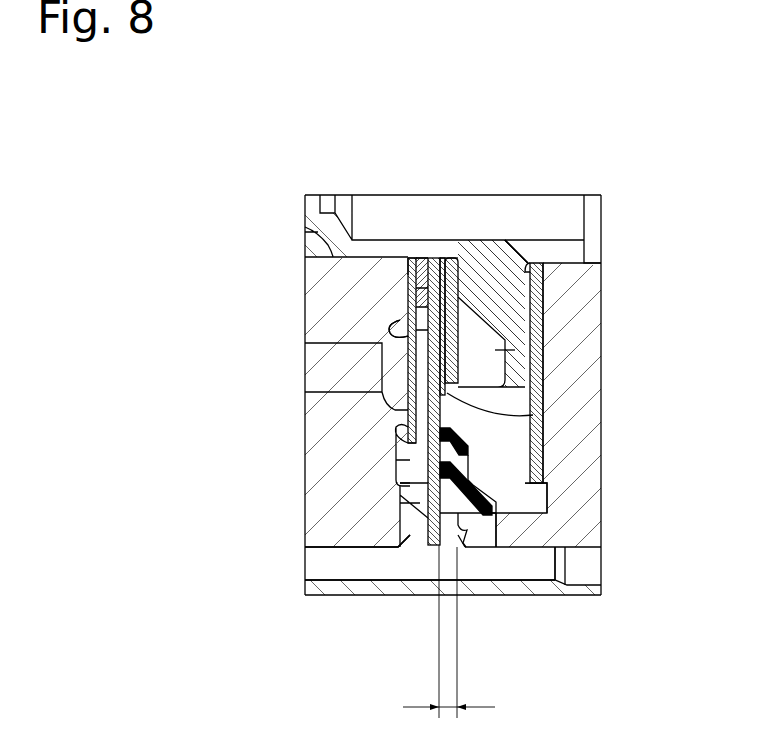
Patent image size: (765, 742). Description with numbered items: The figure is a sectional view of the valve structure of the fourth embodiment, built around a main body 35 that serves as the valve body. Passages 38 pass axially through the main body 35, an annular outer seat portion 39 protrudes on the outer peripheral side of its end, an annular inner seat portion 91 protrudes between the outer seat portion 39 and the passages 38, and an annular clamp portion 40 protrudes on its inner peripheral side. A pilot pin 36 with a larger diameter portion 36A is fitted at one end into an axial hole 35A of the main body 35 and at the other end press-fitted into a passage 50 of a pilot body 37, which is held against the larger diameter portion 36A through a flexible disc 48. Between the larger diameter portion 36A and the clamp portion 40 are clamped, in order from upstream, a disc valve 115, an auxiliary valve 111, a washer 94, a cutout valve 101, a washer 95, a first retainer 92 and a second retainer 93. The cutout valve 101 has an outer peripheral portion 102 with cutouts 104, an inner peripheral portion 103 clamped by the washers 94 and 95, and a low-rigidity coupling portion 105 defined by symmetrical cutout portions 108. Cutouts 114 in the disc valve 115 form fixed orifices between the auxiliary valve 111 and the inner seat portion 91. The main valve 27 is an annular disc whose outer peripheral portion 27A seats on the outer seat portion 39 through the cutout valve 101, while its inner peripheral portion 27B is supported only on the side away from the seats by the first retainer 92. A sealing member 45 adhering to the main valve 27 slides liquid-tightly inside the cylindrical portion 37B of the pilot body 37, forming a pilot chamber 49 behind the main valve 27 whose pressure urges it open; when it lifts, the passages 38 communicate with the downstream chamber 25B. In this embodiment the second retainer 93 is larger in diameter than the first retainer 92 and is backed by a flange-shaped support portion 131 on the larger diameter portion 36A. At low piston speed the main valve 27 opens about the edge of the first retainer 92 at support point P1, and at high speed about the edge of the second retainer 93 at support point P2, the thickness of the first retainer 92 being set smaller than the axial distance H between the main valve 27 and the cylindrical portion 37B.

The chamber 25B is at (305, 590).
The main valve 27 is at (433, 546).
The outer peripheral portion 27A is at (477, 528).
The inner peripheral portion 27B is at (545, 386).
The main body 35 is at (360, 549).
The axial hole 35A is at (312, 233).
The pilot pin 36 is at (592, 255).
The larger diameter portion 36A is at (548, 302).
The pilot body 37 is at (582, 549).
The cylindrical portion 37B is at (565, 563).
The passages 38 is at (332, 370).
The outer seat portion 39 is at (427, 527).
The clamp portion 40 is at (380, 337).
The sealing member 45 is at (528, 527).
The flexible disc 48 is at (568, 213).
The pilot chamber 49 is at (545, 495).
The passage 50 is at (571, 196).
The inner seat portion 91 is at (426, 458).
The first retainer 92 is at (456, 258).
The second retainer 93 is at (528, 243).
The washer 94 is at (421, 257).
The washer 95 is at (447, 258).
The cutout valve 101 is at (441, 257).
The outer peripheral portion 102 is at (397, 473).
The inner peripheral portion 103 is at (409, 288).
The cutouts 104 is at (400, 490).
The coupling portion 105 is at (395, 366).
The cutout portion 108 is at (395, 366).
The auxiliary valve 111 is at (413, 257).
The cutouts 114 is at (398, 428).
The disc valve 115 is at (408, 256).
The support portion 131 is at (545, 334).
The support point P1 is at (495, 350).
The support point P2 is at (533, 415).
The distance H is at (449, 643).